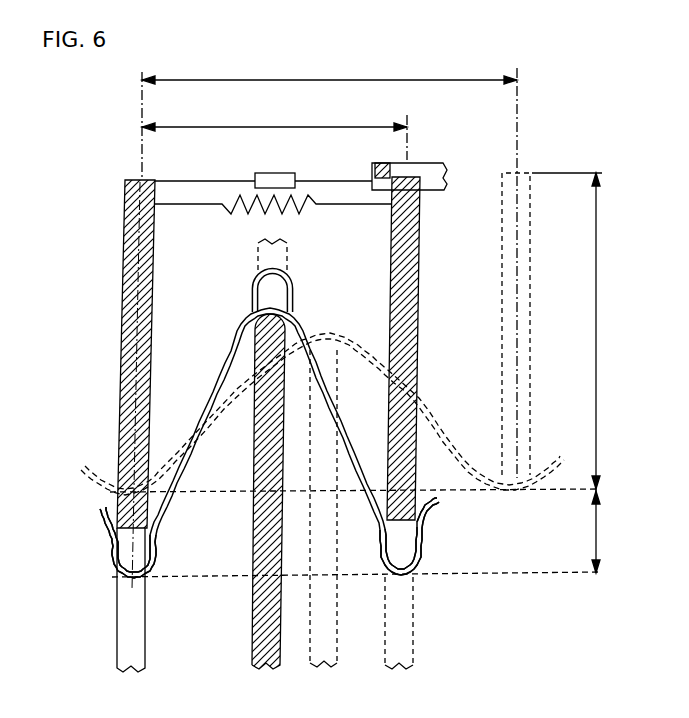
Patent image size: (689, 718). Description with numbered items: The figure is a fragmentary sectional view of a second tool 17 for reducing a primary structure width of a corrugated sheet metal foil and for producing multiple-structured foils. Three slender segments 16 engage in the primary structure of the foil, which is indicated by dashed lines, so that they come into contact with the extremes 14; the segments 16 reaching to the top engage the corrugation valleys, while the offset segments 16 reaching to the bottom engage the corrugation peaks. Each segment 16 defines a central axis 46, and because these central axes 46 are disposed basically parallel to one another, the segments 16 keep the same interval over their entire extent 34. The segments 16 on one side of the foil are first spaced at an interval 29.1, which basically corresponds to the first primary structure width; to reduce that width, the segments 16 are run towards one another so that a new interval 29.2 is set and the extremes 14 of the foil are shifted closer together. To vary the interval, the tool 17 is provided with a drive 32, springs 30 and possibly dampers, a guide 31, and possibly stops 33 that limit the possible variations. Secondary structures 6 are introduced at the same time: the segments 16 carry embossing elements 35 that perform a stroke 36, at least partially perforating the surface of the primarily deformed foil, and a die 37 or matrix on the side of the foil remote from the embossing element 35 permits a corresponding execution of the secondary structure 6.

The secondary structure 6 is at (296, 303).
The extremes 14 is at (114, 540).
The segments 16 is at (124, 304).
The second tool 17 is at (84, 238).
The interval 29.1 is at (360, 63).
The new interval 29.2 is at (268, 126).
The springs 30 is at (228, 210).
The guide 31 is at (436, 165).
The drive 32 is at (270, 176).
The stops 33 is at (380, 165).
The extent 34 is at (598, 330).
The embossing elements 35 is at (263, 298).
The stroke 36 is at (597, 528).
The die 37 is at (122, 622).
The central axis 46 is at (140, 158).